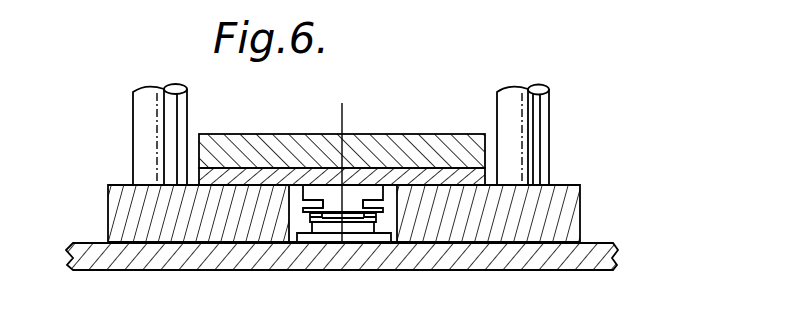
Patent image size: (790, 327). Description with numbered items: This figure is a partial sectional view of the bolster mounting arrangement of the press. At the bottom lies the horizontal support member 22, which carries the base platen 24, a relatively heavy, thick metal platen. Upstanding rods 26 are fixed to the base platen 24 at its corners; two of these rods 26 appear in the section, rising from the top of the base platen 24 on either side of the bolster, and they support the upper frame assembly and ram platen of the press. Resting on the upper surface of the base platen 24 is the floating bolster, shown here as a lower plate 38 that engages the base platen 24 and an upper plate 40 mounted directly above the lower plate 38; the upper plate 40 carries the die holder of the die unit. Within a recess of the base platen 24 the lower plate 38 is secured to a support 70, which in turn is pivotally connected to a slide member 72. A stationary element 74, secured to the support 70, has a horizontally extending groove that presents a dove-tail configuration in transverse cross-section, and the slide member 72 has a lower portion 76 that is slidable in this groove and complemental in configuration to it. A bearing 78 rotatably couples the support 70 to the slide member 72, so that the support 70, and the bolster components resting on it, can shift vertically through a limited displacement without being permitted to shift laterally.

The horizontal support member 22 is at (612, 245).
The base platen 24 is at (572, 215).
The upstanding rods 26 is at (143, 153).
The lower plate 38 is at (455, 178).
The upper plate 40 is at (403, 134).
The support 70 is at (328, 190).
The slide member 72 is at (387, 220).
The stationary element 74 is at (307, 228).
The lower portion 76 is at (353, 222).
The bearing 78 is at (350, 205).